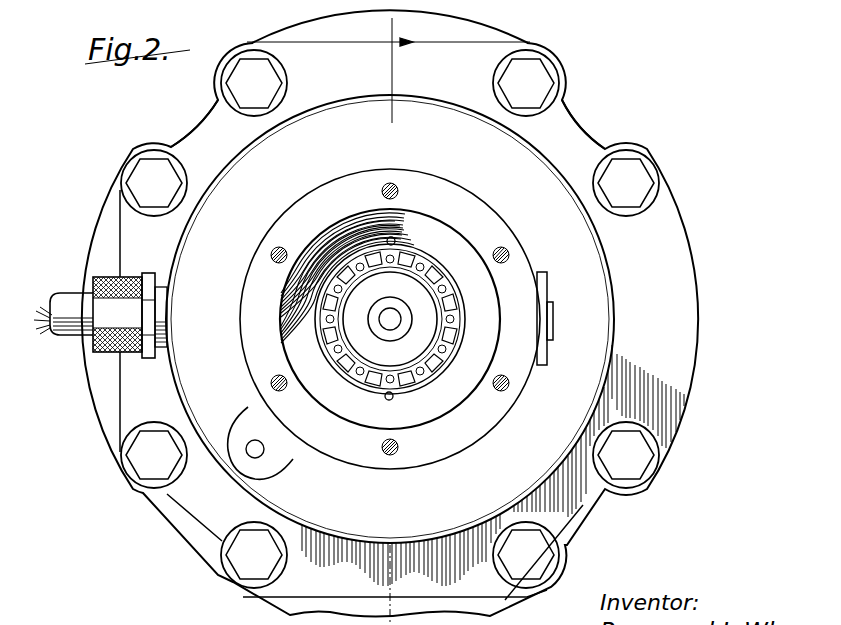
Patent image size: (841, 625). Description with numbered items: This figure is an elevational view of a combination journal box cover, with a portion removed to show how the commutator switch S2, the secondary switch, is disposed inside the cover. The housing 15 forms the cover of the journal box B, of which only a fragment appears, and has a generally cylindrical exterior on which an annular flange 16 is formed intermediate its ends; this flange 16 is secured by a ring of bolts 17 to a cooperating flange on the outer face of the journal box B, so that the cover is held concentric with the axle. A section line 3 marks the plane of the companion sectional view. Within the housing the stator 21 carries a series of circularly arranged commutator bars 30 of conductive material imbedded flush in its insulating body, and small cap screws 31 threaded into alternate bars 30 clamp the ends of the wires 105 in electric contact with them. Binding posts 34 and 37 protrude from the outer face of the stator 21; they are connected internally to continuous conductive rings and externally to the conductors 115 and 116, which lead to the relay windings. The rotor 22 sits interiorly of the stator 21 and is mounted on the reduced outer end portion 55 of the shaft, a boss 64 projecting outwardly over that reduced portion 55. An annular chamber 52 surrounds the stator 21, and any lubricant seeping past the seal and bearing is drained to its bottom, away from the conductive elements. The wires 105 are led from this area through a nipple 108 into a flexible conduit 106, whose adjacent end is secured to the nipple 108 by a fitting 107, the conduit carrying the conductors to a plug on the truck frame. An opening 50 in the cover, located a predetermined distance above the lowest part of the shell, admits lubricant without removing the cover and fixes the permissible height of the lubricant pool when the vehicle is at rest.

The section line 3- 3 is at (388, 70).
The housing 15 is at (583, 263).
The journal box B is at (591, 112).
The annular flange 16 is at (643, 293).
The bolts 17 is at (249, 74).
The stator 21 is at (478, 342).
The rotor 22 is at (447, 257).
The commutator bars 30 is at (415, 388).
The cap screws 31 is at (452, 319).
The binding post 34 is at (421, 212).
The binding post 37 is at (402, 398).
The opening 50 is at (262, 455).
The annular chamber 52 is at (458, 400).
The reduced outer end portion 55 is at (392, 326).
The boss 64 is at (382, 300).
The wires 105 is at (330, 240).
The flexible conduit 106 is at (70, 303).
The fitting 107 is at (107, 277).
The nipple 108 is at (160, 273).
The conductor 115 is at (391, 238).
The conductor 116 is at (378, 393).
The secondary switch S2 is at (443, 230).